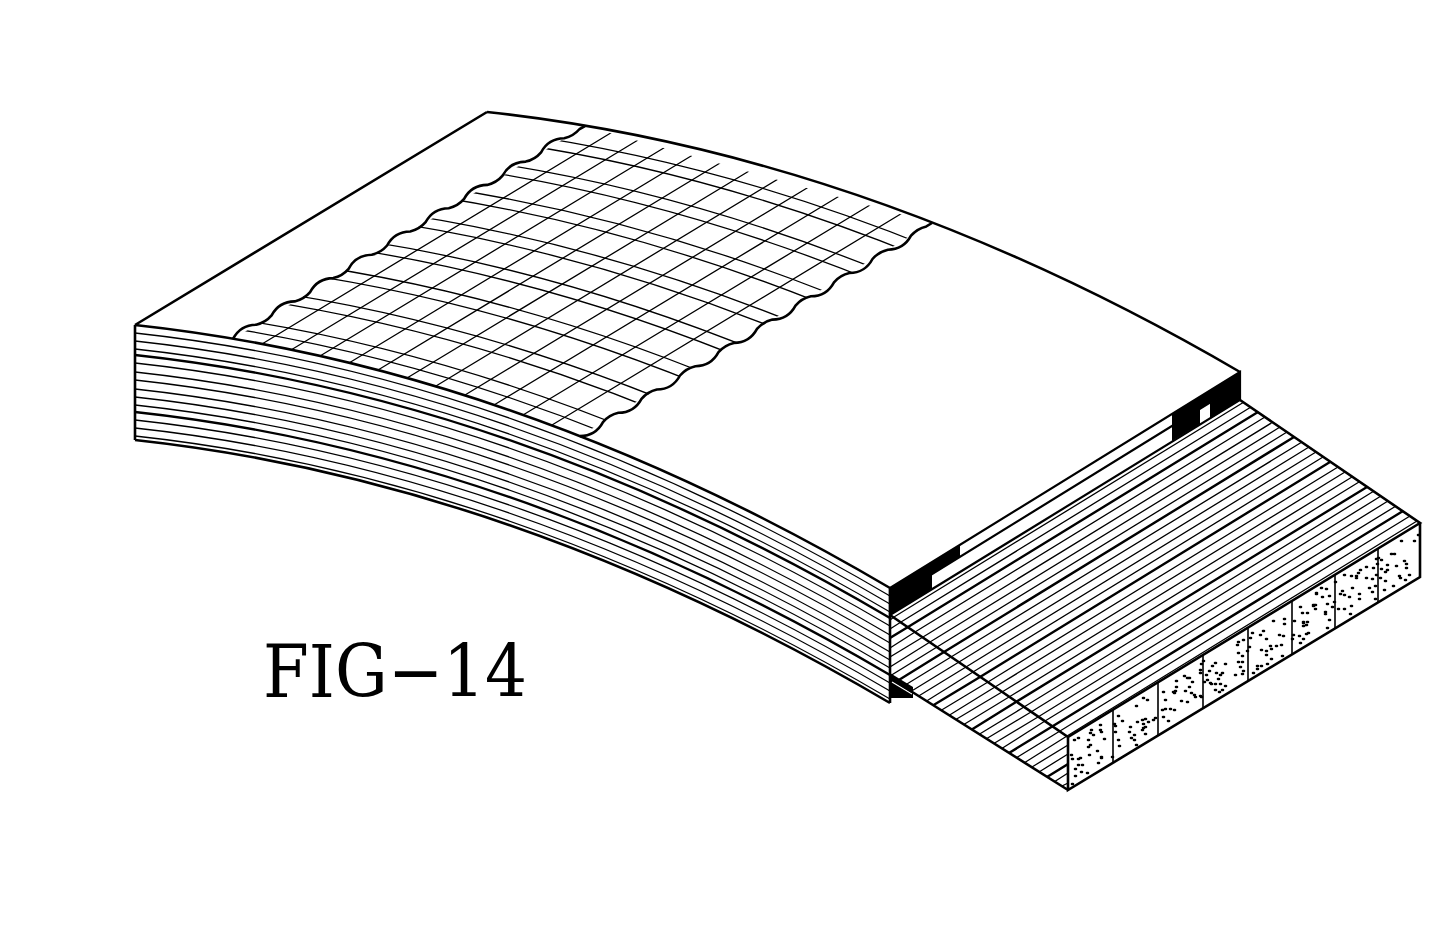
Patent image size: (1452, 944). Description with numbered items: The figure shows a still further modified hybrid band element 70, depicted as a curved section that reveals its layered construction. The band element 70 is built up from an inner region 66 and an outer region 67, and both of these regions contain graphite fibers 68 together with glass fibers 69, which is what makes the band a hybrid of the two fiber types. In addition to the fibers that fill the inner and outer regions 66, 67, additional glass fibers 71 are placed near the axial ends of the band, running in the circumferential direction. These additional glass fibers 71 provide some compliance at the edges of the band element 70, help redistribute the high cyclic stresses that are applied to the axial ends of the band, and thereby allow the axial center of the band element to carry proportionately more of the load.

The inner region 66 is at (276, 462).
The outer region 67 is at (1054, 320).
The graphite fibers 68 is at (735, 218).
The glass fibers 69 is at (592, 168).
The band element 70 is at (777, 421).
The additional glass fibers 71 is at (707, 165).